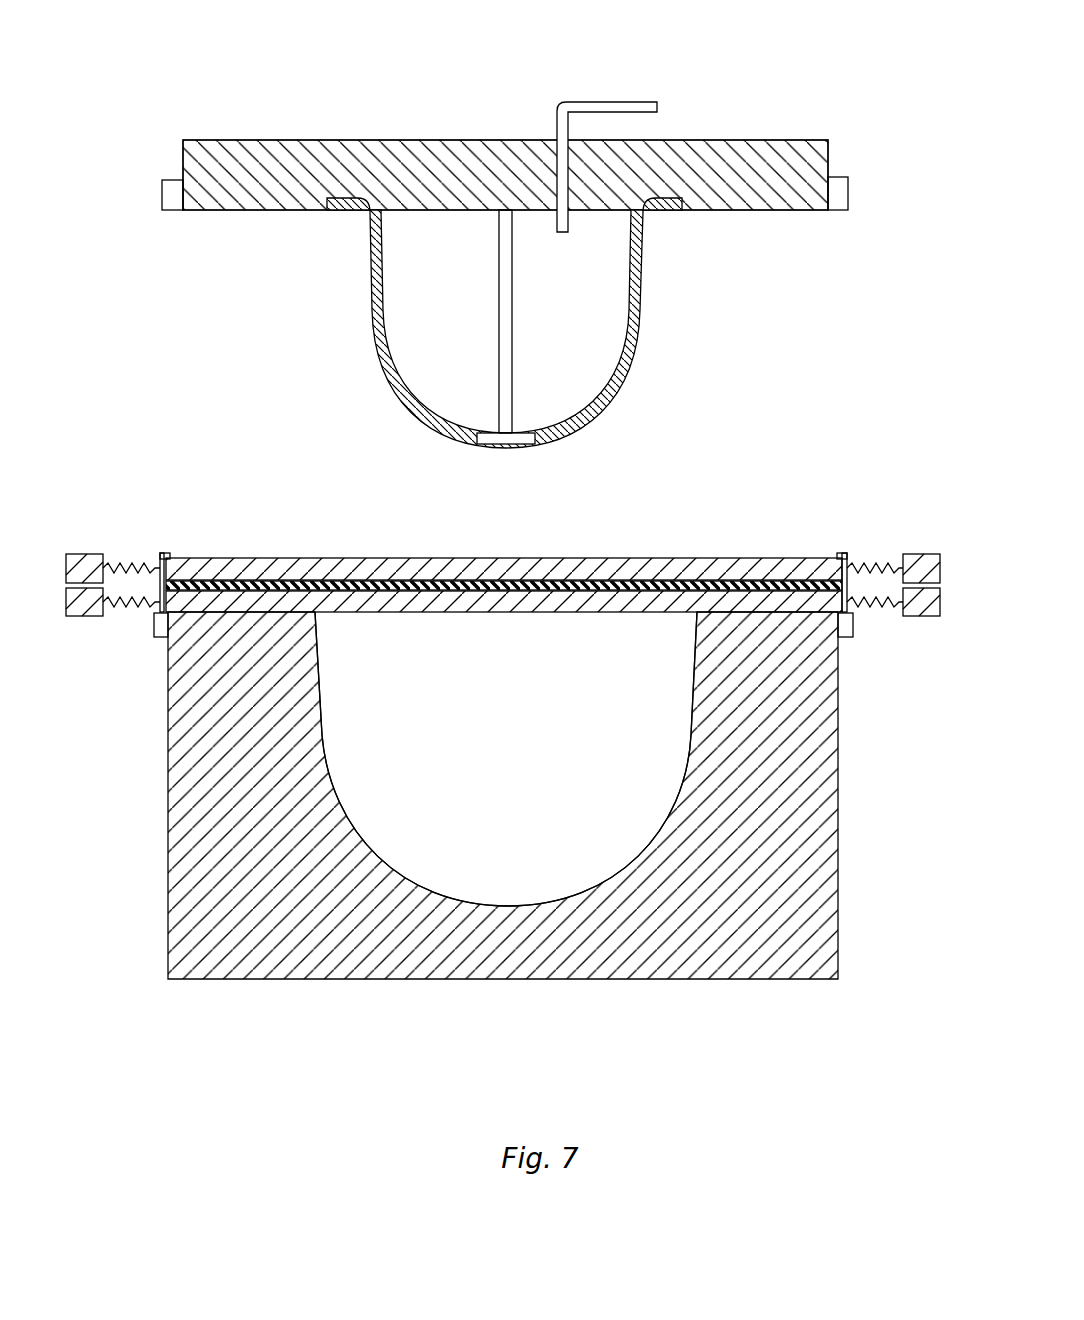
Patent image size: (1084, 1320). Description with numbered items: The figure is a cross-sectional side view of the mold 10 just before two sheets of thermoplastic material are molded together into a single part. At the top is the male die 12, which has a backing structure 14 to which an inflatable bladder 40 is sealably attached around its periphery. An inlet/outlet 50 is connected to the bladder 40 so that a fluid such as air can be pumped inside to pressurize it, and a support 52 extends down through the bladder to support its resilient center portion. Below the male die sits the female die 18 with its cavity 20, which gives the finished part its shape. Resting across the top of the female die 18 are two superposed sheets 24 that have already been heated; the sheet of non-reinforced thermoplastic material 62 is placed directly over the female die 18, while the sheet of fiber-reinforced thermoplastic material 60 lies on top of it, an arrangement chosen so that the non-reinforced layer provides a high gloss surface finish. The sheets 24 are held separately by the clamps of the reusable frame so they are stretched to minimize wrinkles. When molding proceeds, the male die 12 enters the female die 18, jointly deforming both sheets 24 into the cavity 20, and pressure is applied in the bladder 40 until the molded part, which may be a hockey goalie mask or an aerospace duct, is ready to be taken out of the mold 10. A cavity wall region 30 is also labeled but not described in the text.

The mold 10 is at (810, 361).
The male die 12 is at (457, 138).
The backing structure 14 is at (830, 157).
The female die 18 is at (768, 812).
The cavity 20 is at (597, 724).
The sheet 24 is at (302, 578).
The cavity wall 30 is at (688, 698).
The inflatable bladder 40 is at (641, 312).
The inlet/outlet 50 is at (617, 102).
The support 52 is at (512, 322).
The fiber-reinforced thermoplastic material 60 is at (633, 557).
The non-reinforced thermoplastic material 62 is at (222, 600).